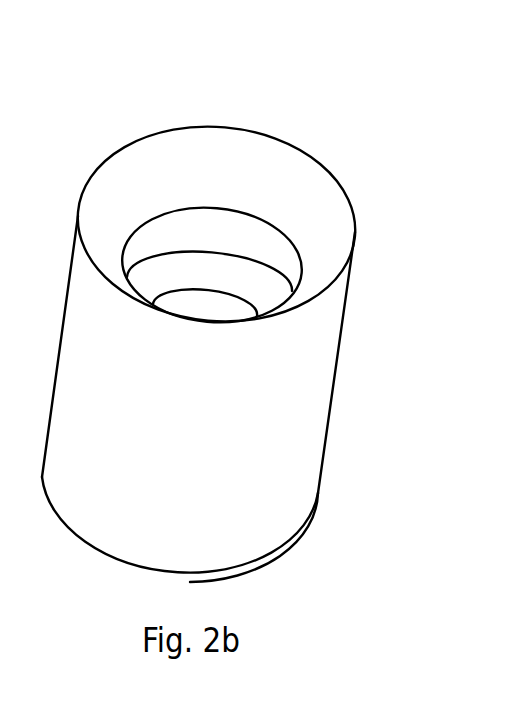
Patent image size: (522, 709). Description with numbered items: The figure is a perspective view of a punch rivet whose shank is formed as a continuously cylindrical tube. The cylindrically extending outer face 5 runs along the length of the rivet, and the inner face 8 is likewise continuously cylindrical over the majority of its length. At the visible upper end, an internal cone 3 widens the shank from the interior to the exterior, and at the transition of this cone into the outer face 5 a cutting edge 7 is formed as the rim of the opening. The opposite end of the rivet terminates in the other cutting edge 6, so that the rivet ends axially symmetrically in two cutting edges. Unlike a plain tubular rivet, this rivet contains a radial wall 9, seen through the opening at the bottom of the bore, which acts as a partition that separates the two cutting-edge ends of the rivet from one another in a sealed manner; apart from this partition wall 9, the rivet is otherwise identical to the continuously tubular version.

The internal cone 3 is at (133, 178).
The outer face 5 is at (343, 333).
The cutting edge 6 is at (257, 568).
The cutting edge 7 is at (309, 157).
The inner face 8 is at (210, 238).
The radial wall 9 is at (215, 312).